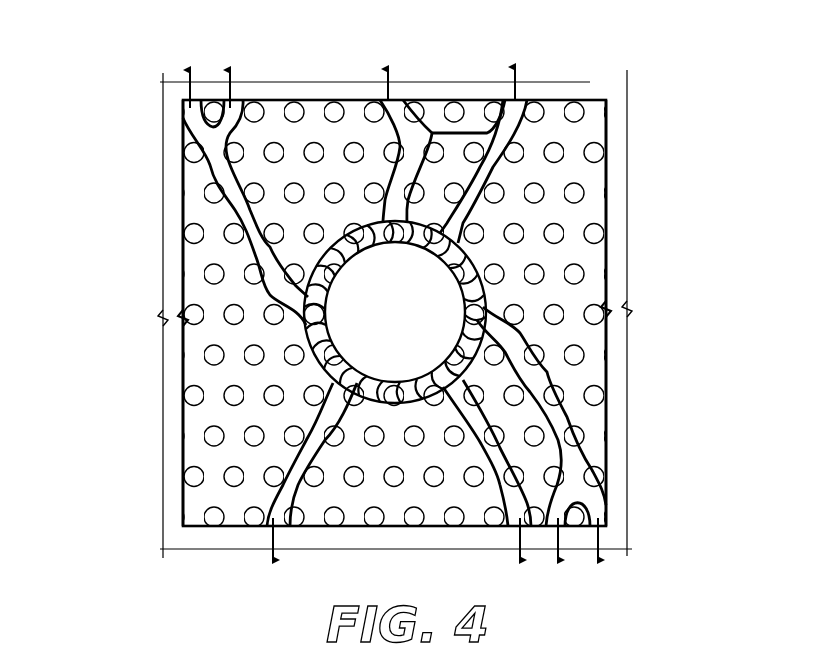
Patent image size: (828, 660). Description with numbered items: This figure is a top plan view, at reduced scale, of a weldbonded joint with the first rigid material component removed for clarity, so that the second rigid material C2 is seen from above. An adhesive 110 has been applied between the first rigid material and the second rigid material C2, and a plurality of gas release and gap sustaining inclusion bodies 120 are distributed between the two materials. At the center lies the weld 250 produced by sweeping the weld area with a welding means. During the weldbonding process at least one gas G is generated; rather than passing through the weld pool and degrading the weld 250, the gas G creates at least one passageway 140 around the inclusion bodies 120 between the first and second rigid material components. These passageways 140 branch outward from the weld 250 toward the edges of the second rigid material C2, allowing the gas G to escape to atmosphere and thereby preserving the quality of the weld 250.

The adhesive 110 is at (477, 108).
The gas release and gap sustaining inclusion bodies 120 is at (546, 110).
The passageway 140 is at (460, 108).
The weld 250 is at (466, 346).
The gas G is at (227, 99).
The second rigid material C2 is at (360, 80).